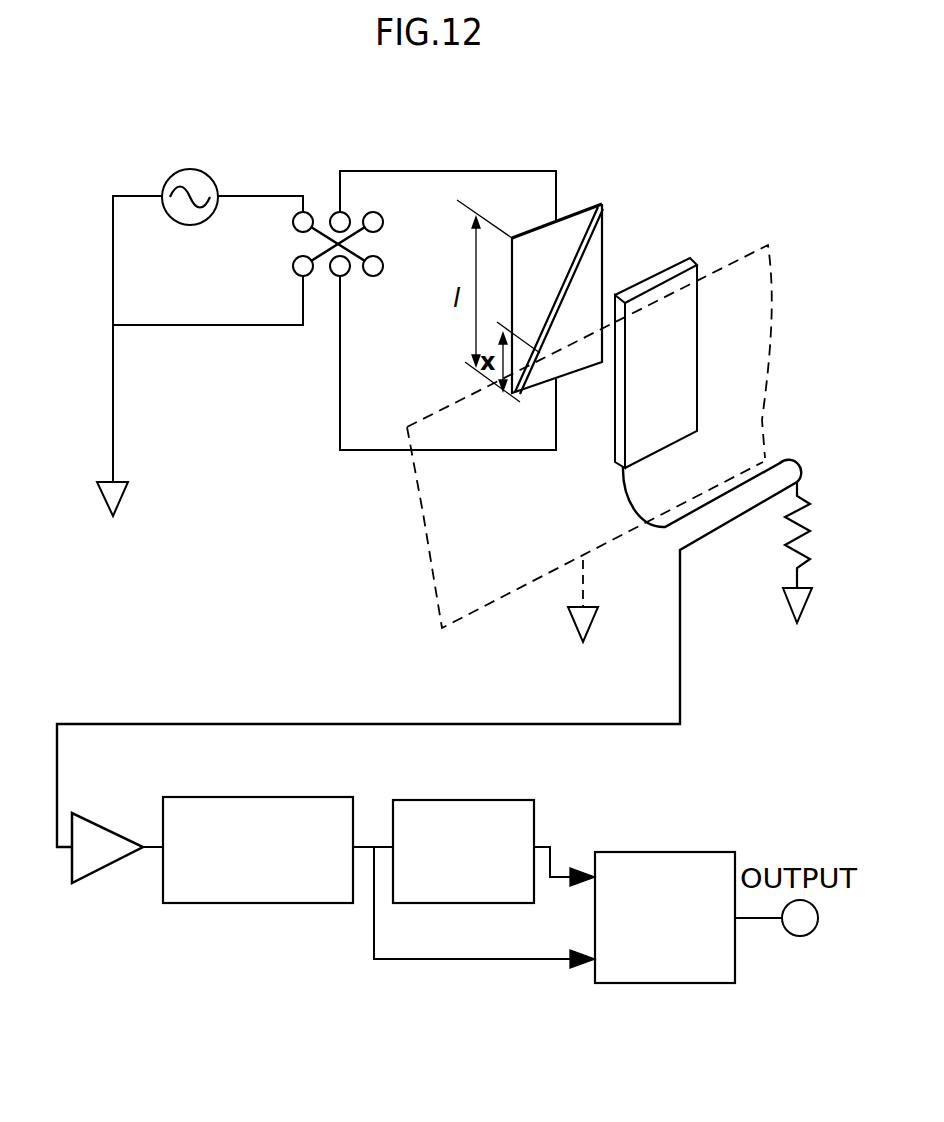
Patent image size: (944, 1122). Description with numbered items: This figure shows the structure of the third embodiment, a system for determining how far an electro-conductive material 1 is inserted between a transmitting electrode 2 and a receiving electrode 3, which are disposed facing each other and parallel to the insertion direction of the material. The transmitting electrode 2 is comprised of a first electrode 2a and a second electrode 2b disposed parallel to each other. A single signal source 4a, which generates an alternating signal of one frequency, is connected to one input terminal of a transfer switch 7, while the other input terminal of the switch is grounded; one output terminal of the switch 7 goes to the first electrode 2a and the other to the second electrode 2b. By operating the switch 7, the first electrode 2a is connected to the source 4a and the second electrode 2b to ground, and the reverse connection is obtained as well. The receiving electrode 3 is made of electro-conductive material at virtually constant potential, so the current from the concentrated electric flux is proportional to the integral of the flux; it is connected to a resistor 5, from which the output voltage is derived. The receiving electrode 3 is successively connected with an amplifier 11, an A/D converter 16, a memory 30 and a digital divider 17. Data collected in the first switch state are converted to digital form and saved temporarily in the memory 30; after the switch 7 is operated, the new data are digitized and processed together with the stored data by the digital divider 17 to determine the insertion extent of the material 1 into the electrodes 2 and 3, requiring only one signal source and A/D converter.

The electro-conductive material 1 is at (422, 562).
The transmitting electrode 2 is at (590, 315).
The first electrode 2a is at (572, 213).
The second electrode 2b is at (541, 387).
The receiving electrode 3 is at (697, 392).
The signal source 4a is at (191, 169).
The resistor 5 is at (802, 537).
The transfer switch 7 is at (357, 215).
The amplifier 11 is at (100, 822).
The A/D converter 16 is at (247, 797).
The digital divider 17 is at (641, 852).
The memory 30 is at (477, 798).